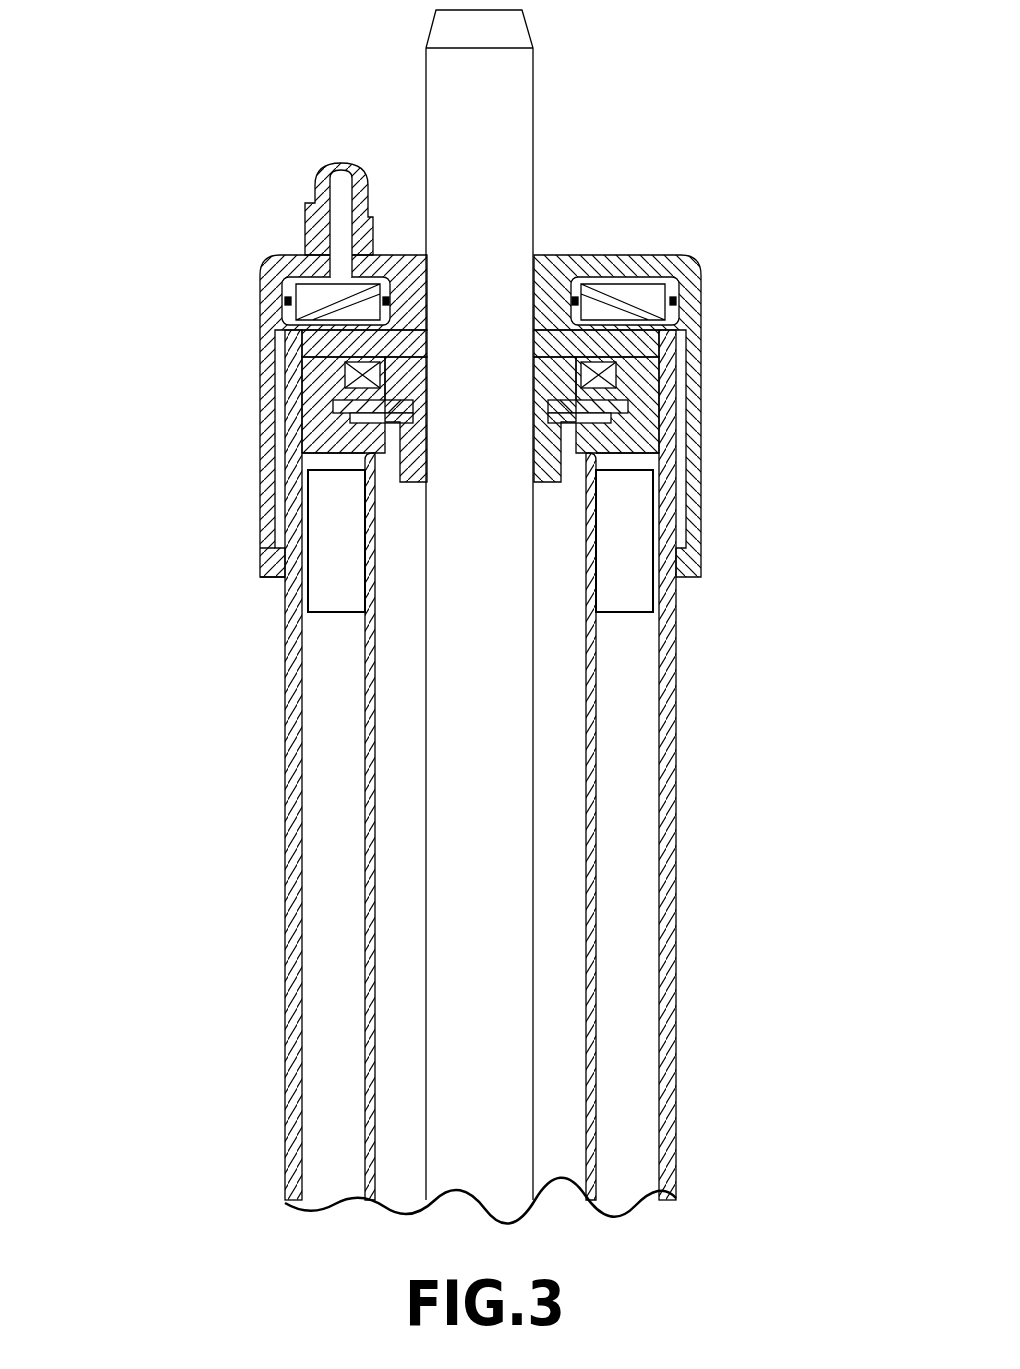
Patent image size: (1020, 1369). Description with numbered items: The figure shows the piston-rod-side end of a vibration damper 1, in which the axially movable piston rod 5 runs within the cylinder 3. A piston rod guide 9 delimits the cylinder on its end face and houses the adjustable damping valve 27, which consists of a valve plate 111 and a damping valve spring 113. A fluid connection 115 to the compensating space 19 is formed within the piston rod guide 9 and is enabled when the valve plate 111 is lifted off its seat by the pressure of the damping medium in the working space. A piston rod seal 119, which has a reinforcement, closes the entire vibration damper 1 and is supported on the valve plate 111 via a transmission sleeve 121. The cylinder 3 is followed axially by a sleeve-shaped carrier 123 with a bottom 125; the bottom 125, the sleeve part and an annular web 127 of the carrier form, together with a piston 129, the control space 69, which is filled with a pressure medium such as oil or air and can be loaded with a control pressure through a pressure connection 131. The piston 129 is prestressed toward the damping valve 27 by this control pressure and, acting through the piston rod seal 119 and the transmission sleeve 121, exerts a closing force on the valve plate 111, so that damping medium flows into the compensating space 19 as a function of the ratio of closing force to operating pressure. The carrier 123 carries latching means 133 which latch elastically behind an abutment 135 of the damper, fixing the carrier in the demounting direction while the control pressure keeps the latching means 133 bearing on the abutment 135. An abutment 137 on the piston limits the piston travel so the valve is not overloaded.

The vibration damper 1 is at (742, 802).
The cylinder 3 is at (604, 678).
The piston rod 5 is at (533, 130).
The piston rod guide 9 is at (565, 458).
The compensating space 19 is at (630, 1000).
The adjustable damping valve 27 is at (652, 377).
The control space 69 is at (655, 280).
The valve plate 111 is at (355, 447).
The damping valve spring 113 is at (345, 380).
The fluid connection 115 is at (580, 468).
The piston rod seal 119 is at (318, 355).
The transmission sleeve 121 is at (350, 402).
The sleeve-shaped carrier 123 is at (236, 513).
The bottom 125 is at (648, 262).
The annular web 127 is at (573, 260).
The piston 129 is at (318, 300).
The pressure connection 131 is at (318, 220).
The latching means 133 is at (283, 570).
The abutment 135 is at (288, 518).
The abutment 137 is at (312, 310).